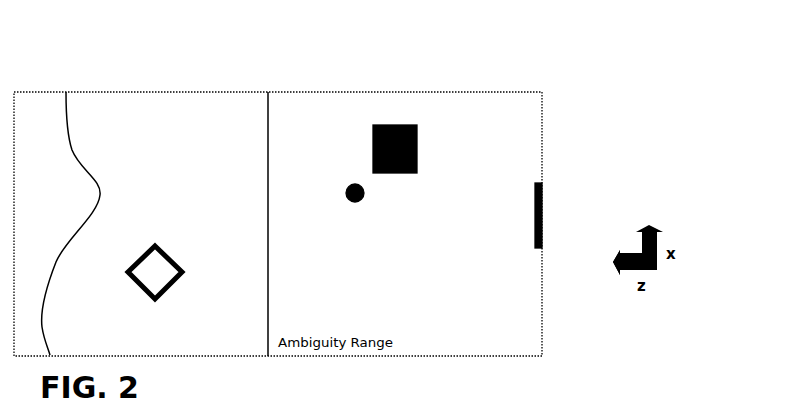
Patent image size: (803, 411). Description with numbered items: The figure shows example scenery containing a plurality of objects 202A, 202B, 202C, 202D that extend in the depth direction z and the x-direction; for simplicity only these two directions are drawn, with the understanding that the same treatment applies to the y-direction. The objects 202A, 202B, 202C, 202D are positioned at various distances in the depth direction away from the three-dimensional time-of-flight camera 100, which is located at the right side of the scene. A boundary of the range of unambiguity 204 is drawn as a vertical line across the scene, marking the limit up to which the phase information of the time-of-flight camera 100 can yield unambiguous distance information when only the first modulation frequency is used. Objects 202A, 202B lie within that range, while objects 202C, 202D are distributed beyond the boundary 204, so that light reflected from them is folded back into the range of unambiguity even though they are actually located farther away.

The 3D TOF camera 100 is at (542, 213).
The object 202A is at (418, 129).
The object 202B is at (355, 185).
The object 202C is at (158, 247).
The object 202D is at (70, 140).
The boundary of the range of unambiguity 204 is at (270, 152).